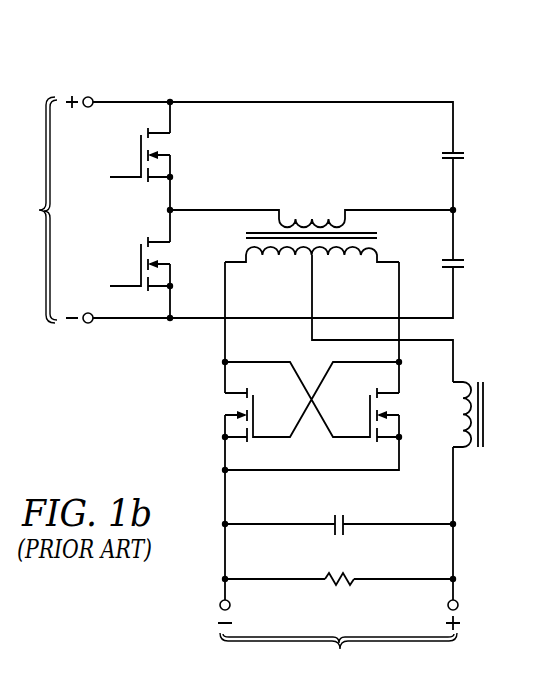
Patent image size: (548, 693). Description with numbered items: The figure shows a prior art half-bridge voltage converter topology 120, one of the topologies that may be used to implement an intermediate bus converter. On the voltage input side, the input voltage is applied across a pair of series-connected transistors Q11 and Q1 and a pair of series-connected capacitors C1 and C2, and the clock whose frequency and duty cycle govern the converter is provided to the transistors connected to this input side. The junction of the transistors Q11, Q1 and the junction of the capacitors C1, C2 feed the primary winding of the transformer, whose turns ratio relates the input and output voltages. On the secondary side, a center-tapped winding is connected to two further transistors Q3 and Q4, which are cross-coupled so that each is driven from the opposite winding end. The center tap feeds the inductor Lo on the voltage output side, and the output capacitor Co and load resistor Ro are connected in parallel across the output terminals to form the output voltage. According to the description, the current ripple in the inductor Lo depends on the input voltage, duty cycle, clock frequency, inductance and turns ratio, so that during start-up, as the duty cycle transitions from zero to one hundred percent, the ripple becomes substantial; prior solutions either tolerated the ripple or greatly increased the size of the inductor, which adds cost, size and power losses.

The half-bridge voltage converter topology 120 is at (378, 72).
The input switch transistor Q11 is at (162, 155).
The input switch transistor Q1 is at (157, 264).
The input capacitor C1 is at (467, 156).
The input capacitor C2 is at (467, 264).
The synchronous rectifier transistor Q3 is at (222, 415).
The synchronous rectifier transistor Q4 is at (402, 415).
The output inductor Lo is at (484, 414).
The output capacitor Co is at (339, 512).
The load resistor Ro is at (339, 565).